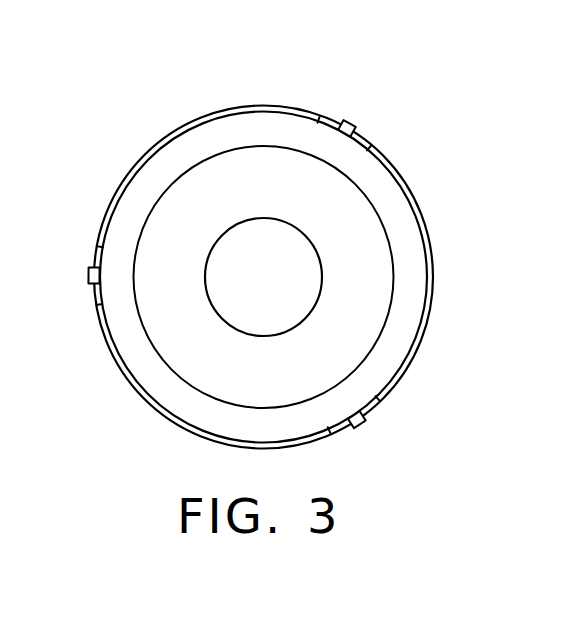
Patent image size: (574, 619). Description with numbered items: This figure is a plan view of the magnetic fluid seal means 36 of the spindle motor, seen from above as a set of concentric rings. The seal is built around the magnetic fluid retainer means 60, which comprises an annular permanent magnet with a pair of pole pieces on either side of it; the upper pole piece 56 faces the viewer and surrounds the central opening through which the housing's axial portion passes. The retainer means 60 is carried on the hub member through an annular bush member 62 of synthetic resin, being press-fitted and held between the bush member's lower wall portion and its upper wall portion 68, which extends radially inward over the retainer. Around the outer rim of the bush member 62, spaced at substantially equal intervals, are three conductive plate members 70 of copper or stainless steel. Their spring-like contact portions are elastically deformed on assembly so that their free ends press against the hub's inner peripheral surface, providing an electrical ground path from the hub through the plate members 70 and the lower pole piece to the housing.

The magnetic fluid seal means 36 is at (248, 97).
The pole piece 56 is at (372, 292).
The magnetic fluid retainer means 60 is at (432, 337).
The annular bush member 62 is at (413, 192).
The upper wall portion 68 is at (412, 234).
The conductive plate members 70 is at (355, 123).